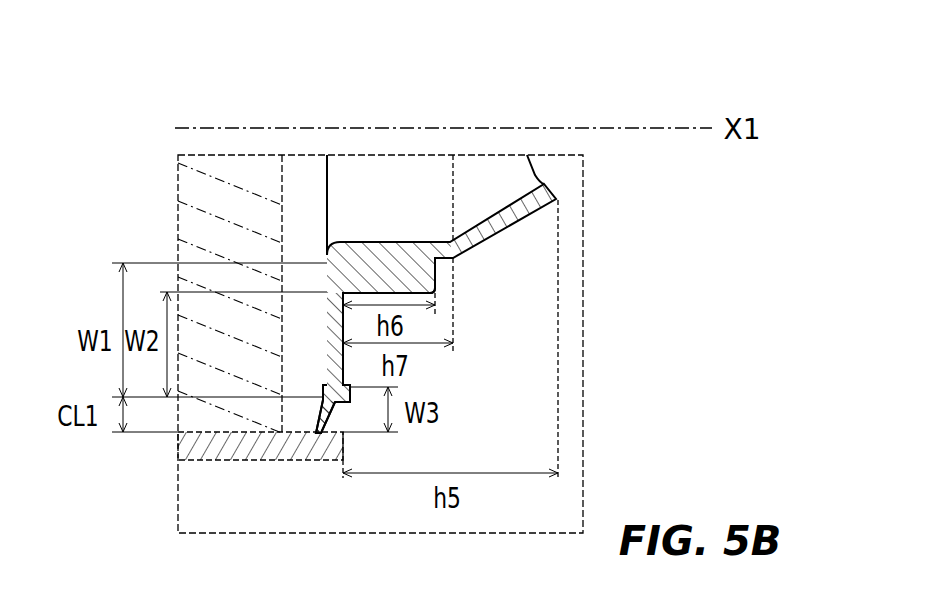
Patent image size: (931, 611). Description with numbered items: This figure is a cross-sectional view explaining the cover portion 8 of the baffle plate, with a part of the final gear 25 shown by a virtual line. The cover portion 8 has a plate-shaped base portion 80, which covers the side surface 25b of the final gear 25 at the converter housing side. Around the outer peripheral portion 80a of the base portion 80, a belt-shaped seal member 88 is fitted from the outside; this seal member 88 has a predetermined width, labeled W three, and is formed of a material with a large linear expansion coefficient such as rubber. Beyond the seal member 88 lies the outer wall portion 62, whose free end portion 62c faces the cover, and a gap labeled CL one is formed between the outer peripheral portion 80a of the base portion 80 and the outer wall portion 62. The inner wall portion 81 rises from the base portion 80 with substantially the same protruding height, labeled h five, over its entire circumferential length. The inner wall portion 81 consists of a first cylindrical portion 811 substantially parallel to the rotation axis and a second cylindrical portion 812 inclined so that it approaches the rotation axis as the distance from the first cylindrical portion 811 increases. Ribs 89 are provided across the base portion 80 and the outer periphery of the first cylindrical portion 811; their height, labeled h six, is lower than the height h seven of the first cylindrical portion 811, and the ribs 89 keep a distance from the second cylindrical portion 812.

The cover portion 8 is at (571, 203).
The inner wall portion 81 is at (352, 86).
The first cylindrical portion 811 is at (392, 250).
The second cylindrical portion 812 is at (500, 205).
The ribs 89 is at (412, 283).
The base portion 80 is at (326, 320).
The outer peripheral portion 80a is at (321, 386).
The seal member 88 is at (316, 434).
The final gear 25 is at (168, 200).
The side surface 25b is at (274, 216).
The outer wall portion 62 is at (220, 446).
The end portion 62c is at (330, 448).